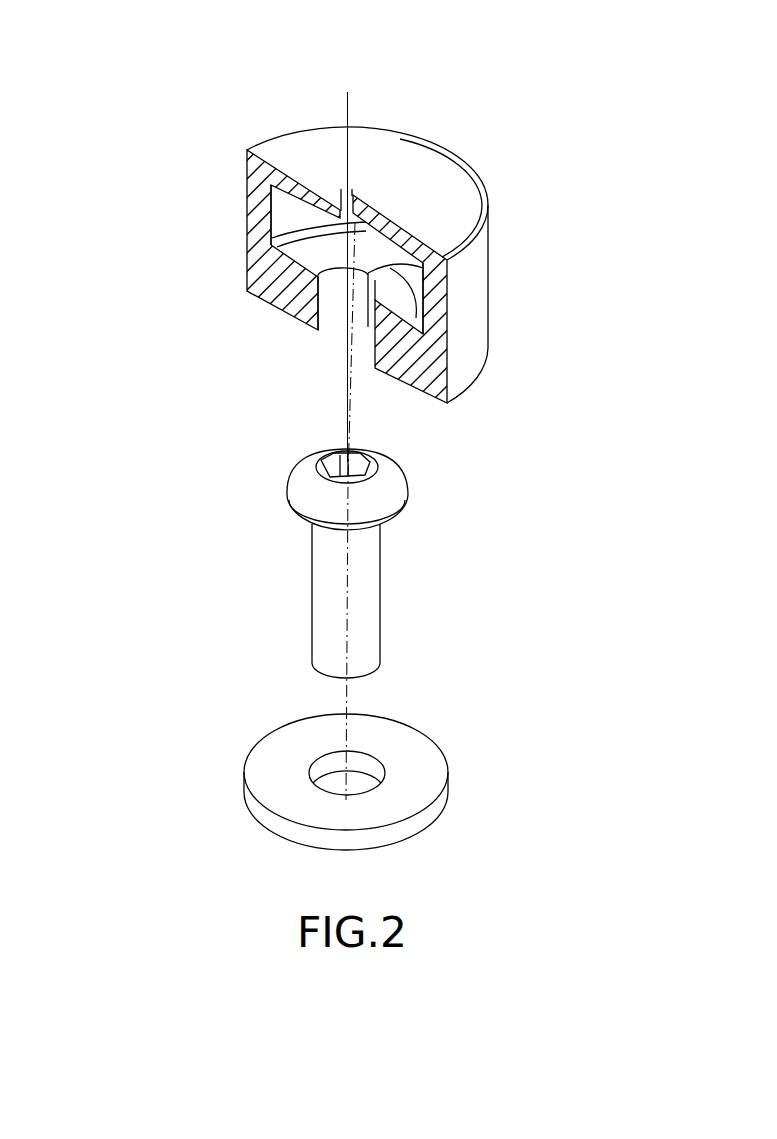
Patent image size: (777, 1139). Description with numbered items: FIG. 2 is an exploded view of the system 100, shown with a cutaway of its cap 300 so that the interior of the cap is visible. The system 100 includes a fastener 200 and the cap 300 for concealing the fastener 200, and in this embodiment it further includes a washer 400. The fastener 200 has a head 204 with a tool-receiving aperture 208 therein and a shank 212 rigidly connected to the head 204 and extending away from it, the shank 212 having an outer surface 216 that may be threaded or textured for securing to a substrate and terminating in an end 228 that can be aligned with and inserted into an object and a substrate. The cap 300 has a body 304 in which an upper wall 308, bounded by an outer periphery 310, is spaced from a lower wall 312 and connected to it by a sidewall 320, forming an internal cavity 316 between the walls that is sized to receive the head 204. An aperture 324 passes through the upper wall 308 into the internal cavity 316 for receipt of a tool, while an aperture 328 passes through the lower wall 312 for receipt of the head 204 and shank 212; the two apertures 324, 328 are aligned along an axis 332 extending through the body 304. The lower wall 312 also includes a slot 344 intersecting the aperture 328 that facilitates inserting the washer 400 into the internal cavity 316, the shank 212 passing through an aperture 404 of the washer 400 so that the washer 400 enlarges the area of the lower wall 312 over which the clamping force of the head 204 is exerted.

The system 100 is at (170, 102).
The fastener 200 is at (481, 565).
The head 204 is at (258, 488).
The tool-receiving aperture 208 is at (345, 460).
The shank 212 is at (287, 578).
The outer surface 216 is at (333, 627).
The end 228 is at (337, 675).
The cap 300 is at (568, 231).
The body 304 is at (488, 223).
The upper wall 308 is at (426, 171).
The outer periphery 310 is at (477, 174).
The lower wall 312 is at (417, 388).
The internal cavity 316 is at (289, 217).
The sidewall 320 is at (470, 287).
The aperture 324 is at (352, 175).
The aperture 328 is at (333, 313).
The axis 332 is at (349, 92).
The slot 344 is at (387, 267).
The washer 400 is at (531, 802).
The aperture 404 is at (310, 764).